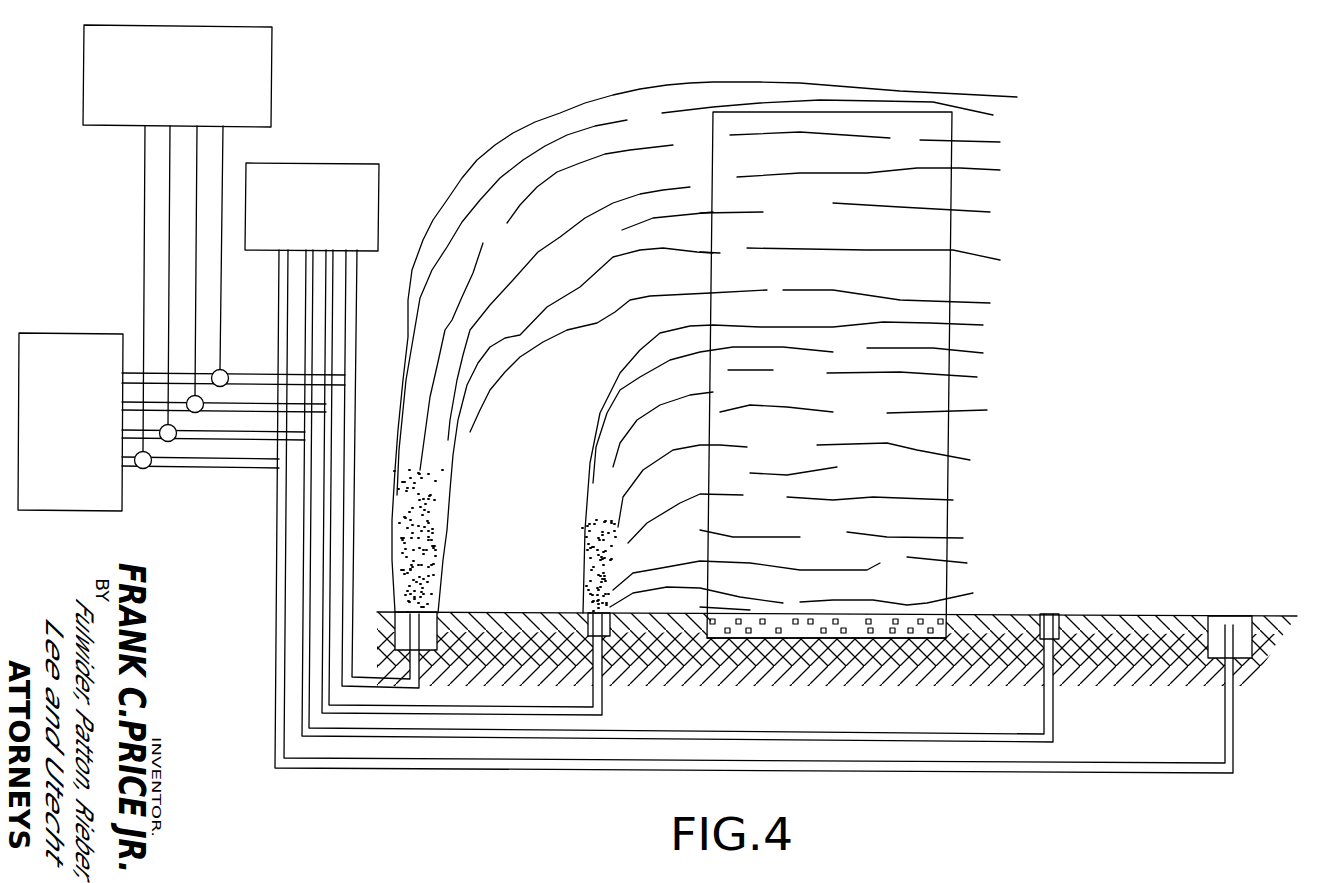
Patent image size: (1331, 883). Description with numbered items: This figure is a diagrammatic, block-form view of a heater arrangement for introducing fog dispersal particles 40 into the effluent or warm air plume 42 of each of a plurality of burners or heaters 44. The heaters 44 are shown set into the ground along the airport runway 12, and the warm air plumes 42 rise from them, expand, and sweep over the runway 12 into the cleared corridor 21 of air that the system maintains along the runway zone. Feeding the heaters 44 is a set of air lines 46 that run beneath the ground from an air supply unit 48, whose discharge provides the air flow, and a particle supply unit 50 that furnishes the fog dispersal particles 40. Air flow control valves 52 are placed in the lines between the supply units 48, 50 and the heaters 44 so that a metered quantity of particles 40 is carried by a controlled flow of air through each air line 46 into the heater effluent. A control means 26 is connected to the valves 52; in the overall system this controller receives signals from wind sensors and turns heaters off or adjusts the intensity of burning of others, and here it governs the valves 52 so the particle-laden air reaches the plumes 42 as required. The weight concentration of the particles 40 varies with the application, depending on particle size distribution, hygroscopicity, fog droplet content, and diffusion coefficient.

The airport runway 12 is at (913, 615).
The cleared corridor 21 is at (950, 364).
The control means 26 is at (273, 63).
The fog dispersal particles 40 is at (507, 367).
The warm air plume 42 is at (473, 428).
The burner or heater 44 is at (437, 625).
The air line 46 is at (405, 688).
The air supply unit 48 is at (362, 170).
The particle supply unit 50 is at (77, 337).
The air flow control valves 52 is at (203, 402).